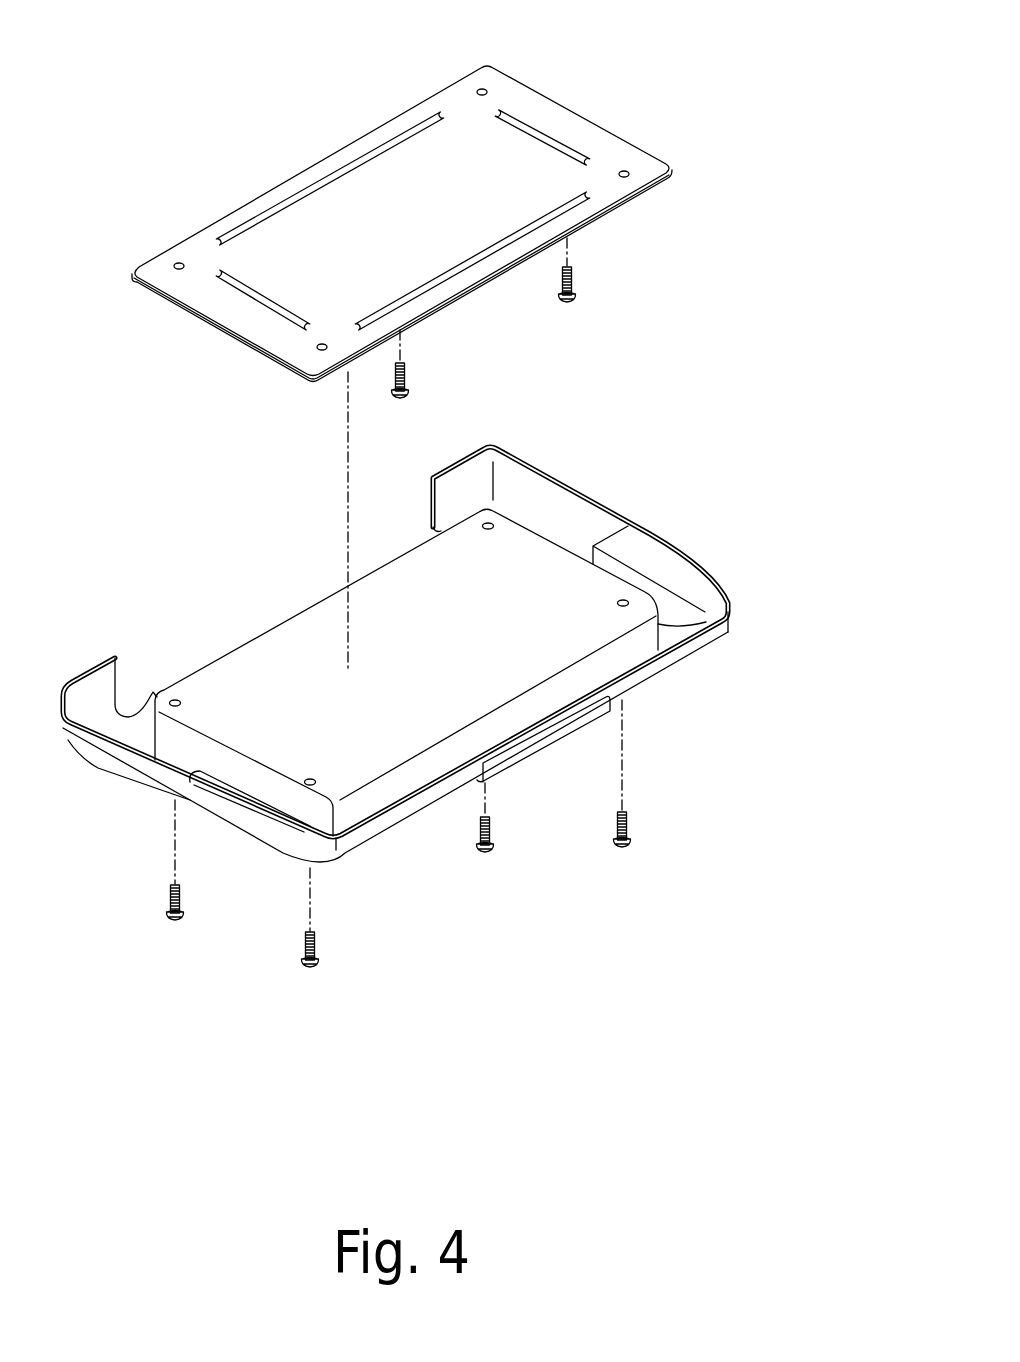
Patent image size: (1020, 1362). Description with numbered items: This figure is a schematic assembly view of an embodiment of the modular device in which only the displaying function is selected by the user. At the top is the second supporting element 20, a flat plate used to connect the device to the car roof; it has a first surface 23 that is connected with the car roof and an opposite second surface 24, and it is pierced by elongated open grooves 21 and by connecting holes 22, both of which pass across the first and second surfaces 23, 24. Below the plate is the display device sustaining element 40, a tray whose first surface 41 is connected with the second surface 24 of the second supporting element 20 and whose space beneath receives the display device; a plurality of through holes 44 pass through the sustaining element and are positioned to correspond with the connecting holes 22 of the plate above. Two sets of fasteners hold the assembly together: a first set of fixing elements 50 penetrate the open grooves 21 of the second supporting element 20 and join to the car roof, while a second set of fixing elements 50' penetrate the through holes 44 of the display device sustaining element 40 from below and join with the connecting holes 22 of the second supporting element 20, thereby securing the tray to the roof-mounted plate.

The second supporting element 20 is at (425, 196).
The open grooves 21 is at (300, 196).
The connecting holes 22 is at (630, 178).
The first surface 23 is at (622, 157).
The second surface 24 is at (606, 216).
The display device sustaining element 40 is at (453, 638).
The first surface 41 is at (532, 584).
The through holes 44 is at (493, 520).
The first set of fixing elements 50 is at (483, 321).
The second set of fixing elements 50' is at (365, 669).